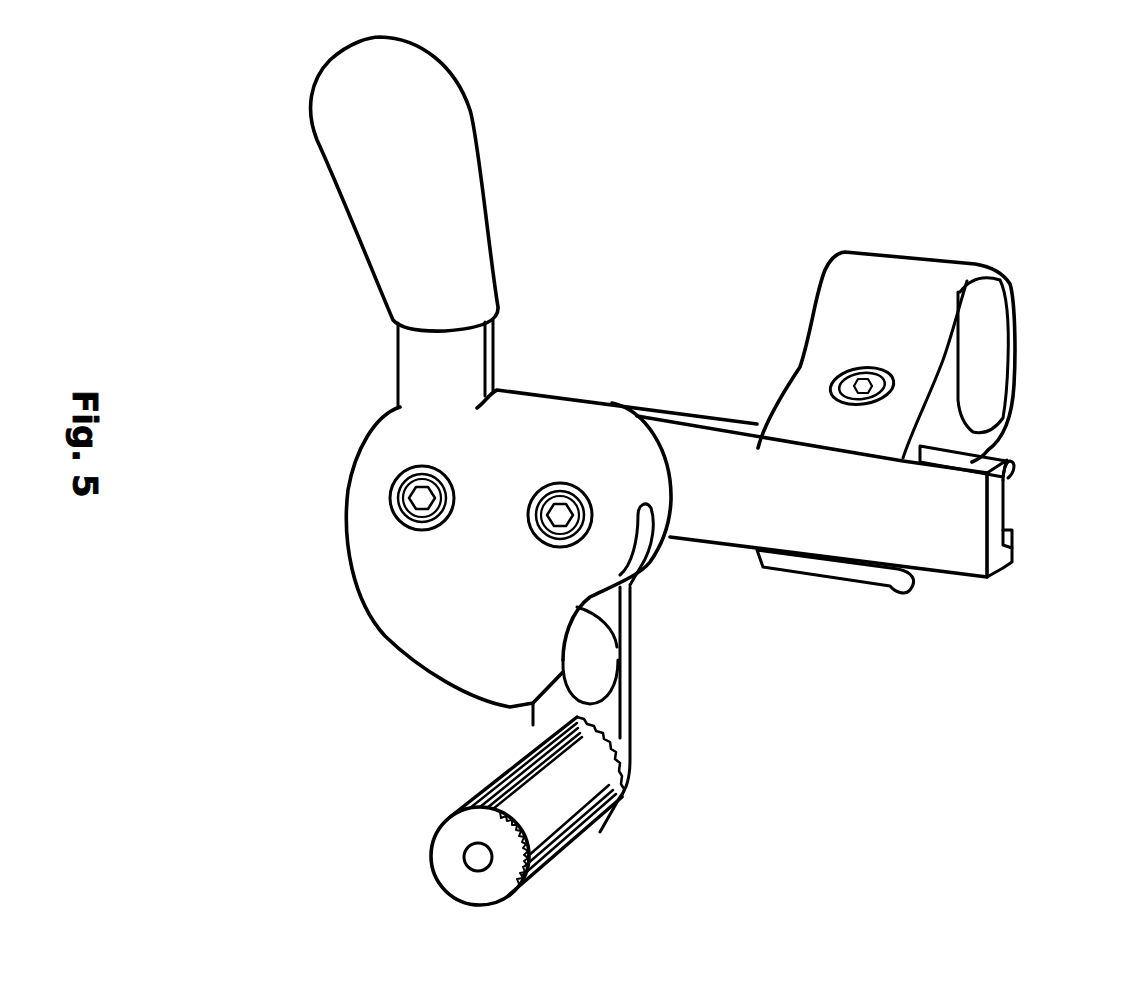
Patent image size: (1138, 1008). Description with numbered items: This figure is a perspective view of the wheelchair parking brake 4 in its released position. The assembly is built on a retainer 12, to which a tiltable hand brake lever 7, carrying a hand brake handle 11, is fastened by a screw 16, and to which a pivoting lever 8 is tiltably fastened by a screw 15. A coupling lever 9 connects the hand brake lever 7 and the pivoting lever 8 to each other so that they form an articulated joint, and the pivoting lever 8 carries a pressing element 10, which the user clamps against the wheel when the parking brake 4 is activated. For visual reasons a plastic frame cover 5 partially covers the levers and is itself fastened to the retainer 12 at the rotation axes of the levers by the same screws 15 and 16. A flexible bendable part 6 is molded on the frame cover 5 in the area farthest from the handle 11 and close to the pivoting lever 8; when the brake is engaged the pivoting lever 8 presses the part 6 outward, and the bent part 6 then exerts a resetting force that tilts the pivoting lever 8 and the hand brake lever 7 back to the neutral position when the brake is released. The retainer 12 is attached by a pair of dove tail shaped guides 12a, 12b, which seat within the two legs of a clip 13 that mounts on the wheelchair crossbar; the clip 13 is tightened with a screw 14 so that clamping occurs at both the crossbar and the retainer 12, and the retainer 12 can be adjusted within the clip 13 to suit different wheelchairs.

The parking brake 4 is at (697, 174).
The frame cover 5 is at (476, 590).
The flexible bendable part 6 is at (663, 542).
The hand brake lever 7 is at (467, 384).
The pivoting lever 8 is at (605, 713).
The coupling lever 9 is at (590, 660).
The pressing element 10 is at (573, 787).
The hand brake handle 11 is at (456, 159).
The retainer 12 is at (882, 531).
The dove tail shaped guide 12a is at (1014, 457).
The dove tail shaped guide 12b is at (1014, 548).
The clip 13 is at (928, 288).
The screw 14 is at (837, 386).
The screw 15 is at (563, 495).
The screw 16 is at (424, 530).